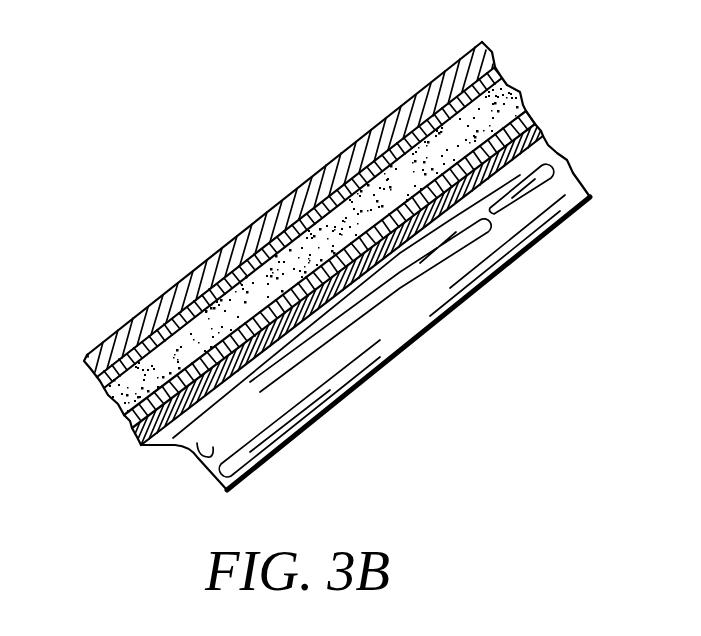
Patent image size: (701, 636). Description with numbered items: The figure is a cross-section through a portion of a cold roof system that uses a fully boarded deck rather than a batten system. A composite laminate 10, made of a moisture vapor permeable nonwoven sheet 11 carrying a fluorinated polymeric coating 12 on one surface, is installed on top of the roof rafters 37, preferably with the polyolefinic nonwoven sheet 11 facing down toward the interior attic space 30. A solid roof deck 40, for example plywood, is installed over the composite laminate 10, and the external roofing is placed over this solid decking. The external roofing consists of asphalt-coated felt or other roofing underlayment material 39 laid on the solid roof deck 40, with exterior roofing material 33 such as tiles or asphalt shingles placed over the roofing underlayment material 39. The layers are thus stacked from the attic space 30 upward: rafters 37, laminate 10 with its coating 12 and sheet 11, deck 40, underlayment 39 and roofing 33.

The composite laminate 10 is at (80, 427).
The nonwoven sheet 11 is at (143, 447).
The fluorinated polymeric coating 12 is at (131, 431).
The interior attic space 30 is at (498, 374).
The exterior roofing material 33 is at (464, 64).
The roof rafters 37 is at (553, 167).
The roofing underlayment material 39 is at (497, 73).
The solid roof deck 40 is at (515, 95).